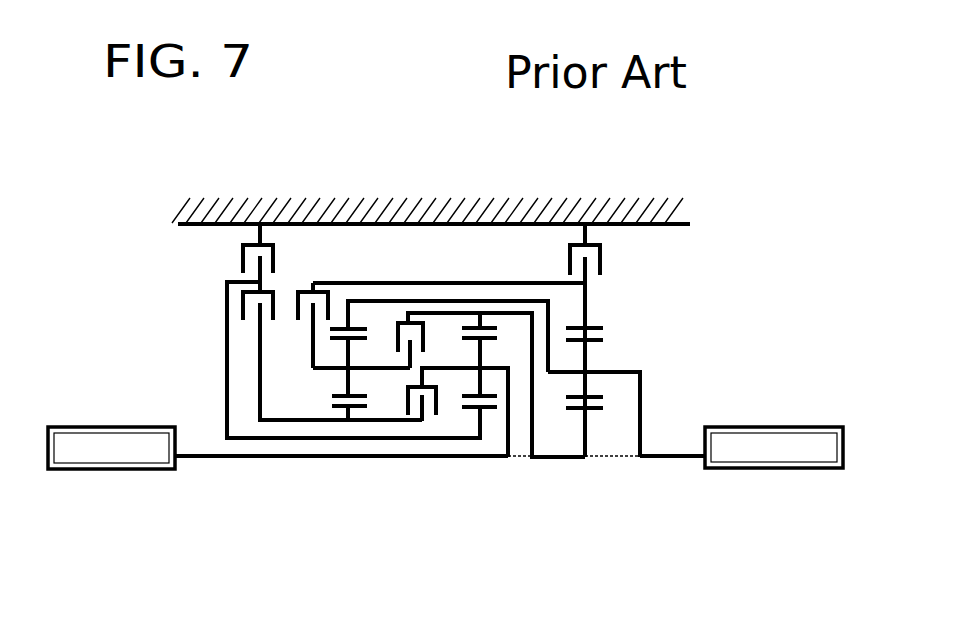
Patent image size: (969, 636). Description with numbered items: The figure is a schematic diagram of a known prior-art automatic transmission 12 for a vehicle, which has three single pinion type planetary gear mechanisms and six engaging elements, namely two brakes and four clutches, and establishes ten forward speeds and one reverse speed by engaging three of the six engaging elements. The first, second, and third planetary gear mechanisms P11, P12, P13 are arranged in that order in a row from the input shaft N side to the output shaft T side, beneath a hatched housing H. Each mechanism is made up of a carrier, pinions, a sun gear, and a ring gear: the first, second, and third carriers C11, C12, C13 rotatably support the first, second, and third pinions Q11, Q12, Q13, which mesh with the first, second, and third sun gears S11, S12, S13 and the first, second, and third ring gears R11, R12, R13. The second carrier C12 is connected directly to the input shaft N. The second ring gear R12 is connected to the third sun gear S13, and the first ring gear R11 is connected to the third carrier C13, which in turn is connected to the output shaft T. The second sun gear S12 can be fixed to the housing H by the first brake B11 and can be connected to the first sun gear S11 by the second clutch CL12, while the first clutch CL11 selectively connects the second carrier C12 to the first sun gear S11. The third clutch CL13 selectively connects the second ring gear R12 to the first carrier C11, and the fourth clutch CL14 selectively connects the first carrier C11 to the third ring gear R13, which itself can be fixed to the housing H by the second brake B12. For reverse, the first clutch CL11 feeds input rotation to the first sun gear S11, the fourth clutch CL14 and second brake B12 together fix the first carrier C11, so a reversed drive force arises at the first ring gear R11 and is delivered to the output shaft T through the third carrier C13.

The automatic transmission for vehicle 12 is at (529, 171).
The housing H is at (421, 210).
The first brake B11 is at (241, 256).
The second brake B12 is at (604, 262).
The first clutch CL11 is at (427, 428).
The second clutch CL12 is at (241, 302).
The third clutch CL13 is at (408, 311).
The fourth clutch CL14 is at (327, 262).
The first planetary gear mechanism P11 is at (378, 392).
The second planetary gear mechanism P12 is at (493, 420).
The third planetary gear mechanism P13 is at (567, 420).
The first ring gear R11 is at (349, 312).
The first pinion Q11 is at (349, 352).
The first carrier C11 is at (328, 378).
The first sun gear S11 is at (346, 412).
The second ring gear R12 is at (481, 325).
The second pinion Q12 is at (474, 352).
The second carrier C12 is at (476, 368).
The second sun gear S12 is at (425, 425).
The third ring gear R13 is at (587, 323).
The third pinion Q13 is at (592, 356).
The third carrier C13 is at (592, 376).
The third sun gear S13 is at (588, 417).
The input shaft N is at (137, 470).
The output shaft T is at (745, 469).